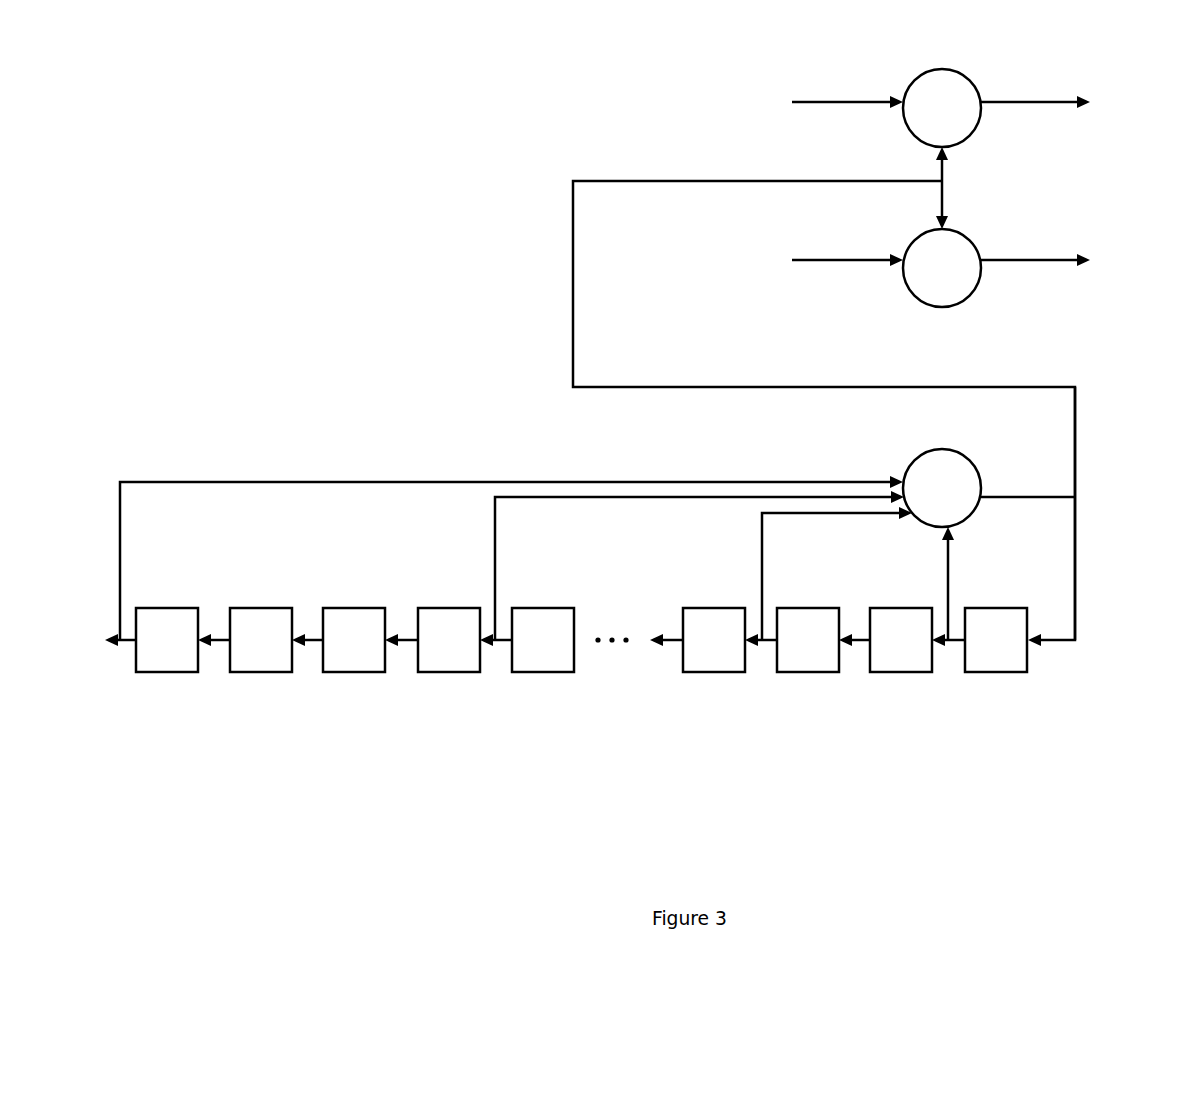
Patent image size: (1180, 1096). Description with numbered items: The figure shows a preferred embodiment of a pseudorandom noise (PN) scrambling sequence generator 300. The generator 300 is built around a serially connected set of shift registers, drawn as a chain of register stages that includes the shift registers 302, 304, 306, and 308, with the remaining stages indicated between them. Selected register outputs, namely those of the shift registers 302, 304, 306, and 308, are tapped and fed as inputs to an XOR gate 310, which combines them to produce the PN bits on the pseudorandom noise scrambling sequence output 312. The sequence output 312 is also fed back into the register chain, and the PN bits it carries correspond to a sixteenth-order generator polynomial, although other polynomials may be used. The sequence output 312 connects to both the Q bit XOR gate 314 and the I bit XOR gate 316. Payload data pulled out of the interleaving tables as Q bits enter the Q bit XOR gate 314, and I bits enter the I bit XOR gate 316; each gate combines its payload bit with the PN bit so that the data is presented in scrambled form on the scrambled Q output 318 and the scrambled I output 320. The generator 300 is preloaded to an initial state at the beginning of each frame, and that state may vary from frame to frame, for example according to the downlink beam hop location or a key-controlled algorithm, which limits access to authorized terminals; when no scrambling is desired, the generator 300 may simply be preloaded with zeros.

The PN scrambling sequence generator 300 is at (1100, 783).
The shift register 302 is at (970, 672).
The shift register 304 is at (784, 672).
The shift register 306 is at (522, 672).
The shift register 308 is at (140, 672).
The XOR gate 310 is at (947, 450).
The pseudorandom noise scrambling sequence output 312 is at (1075, 488).
The Q bit XOR gate 314 is at (945, 70).
The I bit XOR gate 316 is at (928, 308).
The scrambled Q output 318 is at (1060, 100).
The scrambled I output 320 is at (1072, 260).